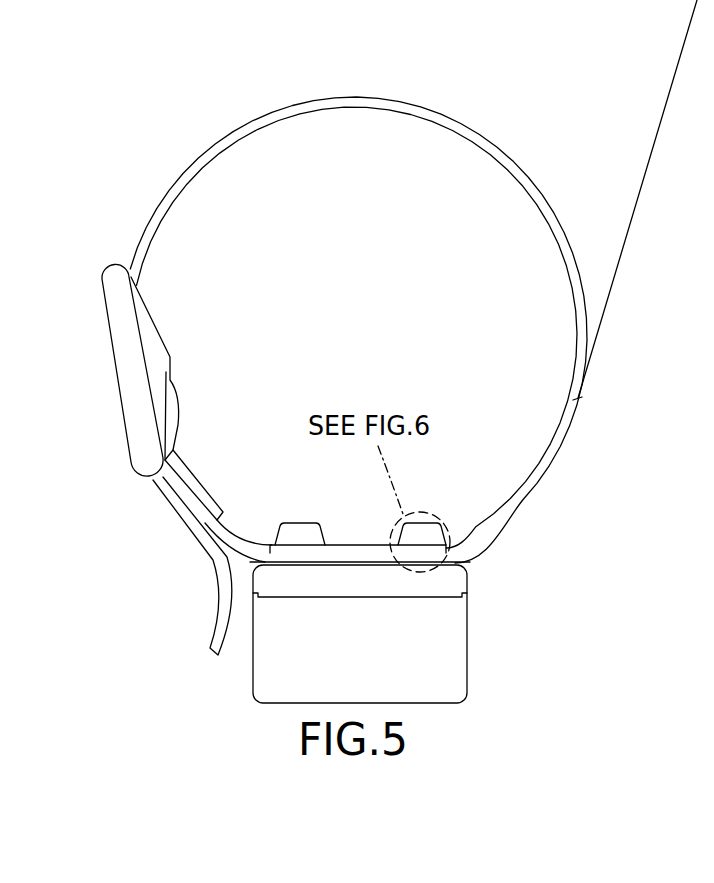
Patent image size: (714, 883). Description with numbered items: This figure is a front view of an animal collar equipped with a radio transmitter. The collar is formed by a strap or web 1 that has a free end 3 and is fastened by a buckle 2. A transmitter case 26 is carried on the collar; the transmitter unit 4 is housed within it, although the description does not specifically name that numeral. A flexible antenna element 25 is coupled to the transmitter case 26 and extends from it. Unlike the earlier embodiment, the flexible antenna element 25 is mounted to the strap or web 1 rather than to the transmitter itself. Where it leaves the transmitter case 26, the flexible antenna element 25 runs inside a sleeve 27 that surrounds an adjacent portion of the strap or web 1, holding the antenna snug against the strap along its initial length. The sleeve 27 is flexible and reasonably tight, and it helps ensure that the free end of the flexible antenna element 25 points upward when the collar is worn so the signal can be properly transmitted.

The strap or web 1 is at (173, 207).
The buckle 2 is at (98, 296).
The free end 3 is at (220, 618).
The control unit 4 is at (370, 654).
The flexible antenna element 25 is at (672, 90).
The transmitter case 26 is at (467, 647).
The sleeve 27 is at (552, 457).